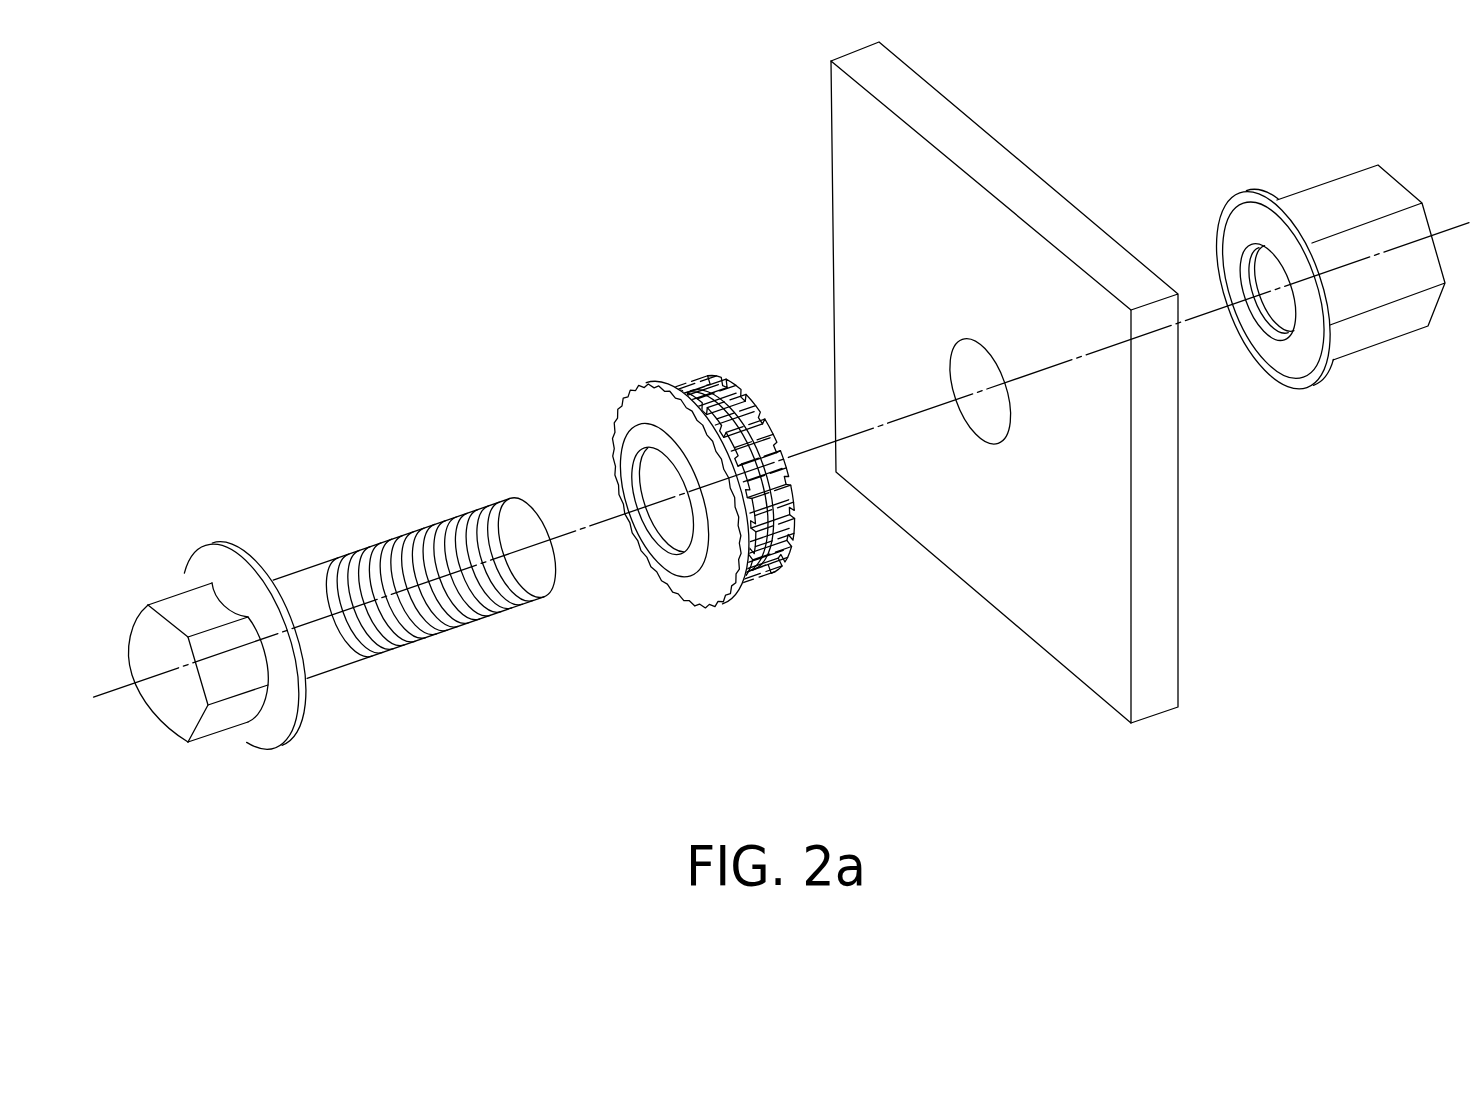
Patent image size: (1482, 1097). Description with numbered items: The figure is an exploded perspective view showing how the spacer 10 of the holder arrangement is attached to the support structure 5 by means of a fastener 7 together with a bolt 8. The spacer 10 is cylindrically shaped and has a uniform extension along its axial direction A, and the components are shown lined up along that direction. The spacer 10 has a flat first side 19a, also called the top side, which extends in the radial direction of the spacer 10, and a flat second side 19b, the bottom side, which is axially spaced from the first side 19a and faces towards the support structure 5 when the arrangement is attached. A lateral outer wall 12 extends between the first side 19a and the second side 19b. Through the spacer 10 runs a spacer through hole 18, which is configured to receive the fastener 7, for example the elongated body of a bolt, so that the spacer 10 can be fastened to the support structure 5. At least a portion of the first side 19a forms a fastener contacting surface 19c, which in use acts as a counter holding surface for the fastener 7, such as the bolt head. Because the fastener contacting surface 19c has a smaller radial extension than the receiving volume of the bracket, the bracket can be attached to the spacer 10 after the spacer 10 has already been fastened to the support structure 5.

The support structure 5 is at (795, 199).
The fastener 7 is at (306, 538).
The bolt 8 is at (1308, 166).
The spacer 10 is at (636, 461).
The outer wall 12 is at (757, 575).
The spacer through hole 18 is at (673, 508).
The first side 19a is at (605, 442).
The second side 19b is at (742, 461).
The fastener contacting surface 19c is at (692, 568).
The axial direction A is at (118, 692).